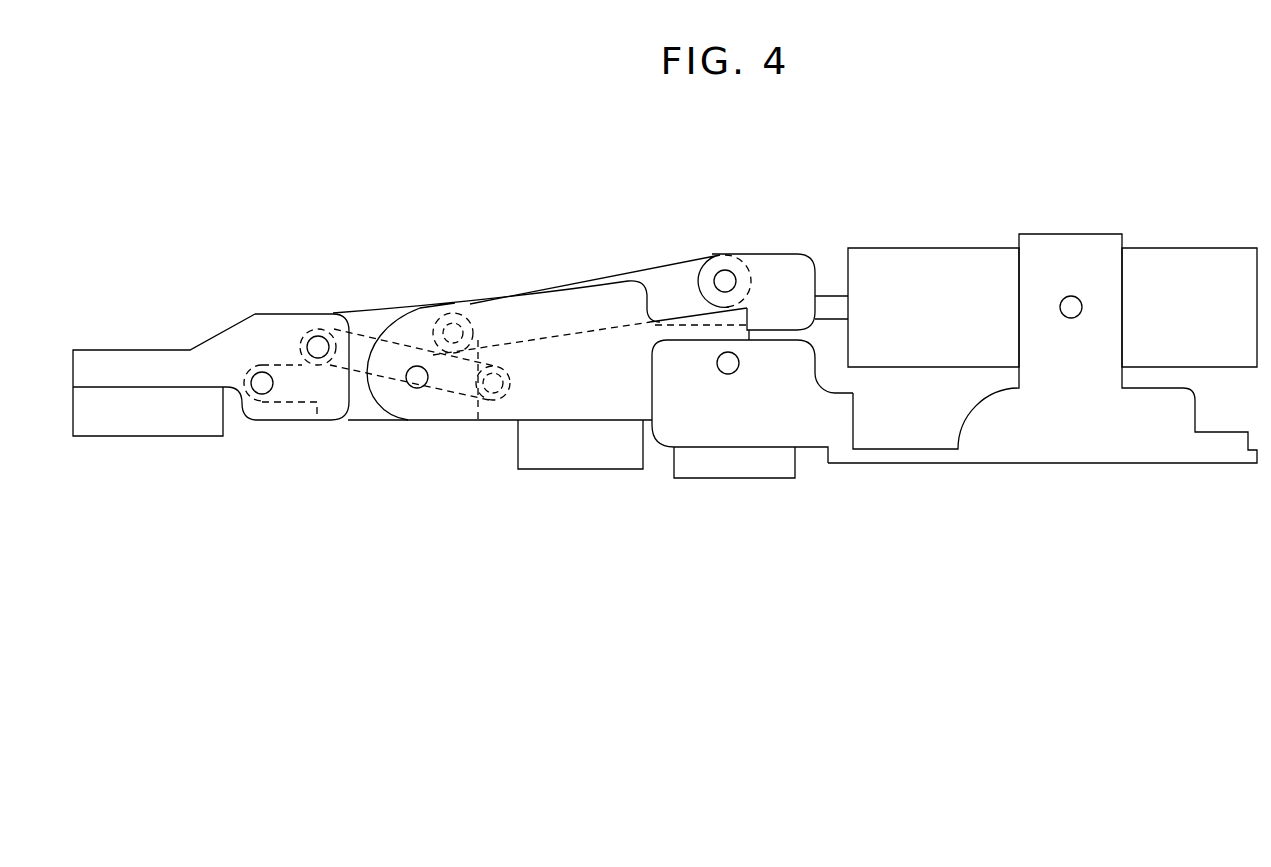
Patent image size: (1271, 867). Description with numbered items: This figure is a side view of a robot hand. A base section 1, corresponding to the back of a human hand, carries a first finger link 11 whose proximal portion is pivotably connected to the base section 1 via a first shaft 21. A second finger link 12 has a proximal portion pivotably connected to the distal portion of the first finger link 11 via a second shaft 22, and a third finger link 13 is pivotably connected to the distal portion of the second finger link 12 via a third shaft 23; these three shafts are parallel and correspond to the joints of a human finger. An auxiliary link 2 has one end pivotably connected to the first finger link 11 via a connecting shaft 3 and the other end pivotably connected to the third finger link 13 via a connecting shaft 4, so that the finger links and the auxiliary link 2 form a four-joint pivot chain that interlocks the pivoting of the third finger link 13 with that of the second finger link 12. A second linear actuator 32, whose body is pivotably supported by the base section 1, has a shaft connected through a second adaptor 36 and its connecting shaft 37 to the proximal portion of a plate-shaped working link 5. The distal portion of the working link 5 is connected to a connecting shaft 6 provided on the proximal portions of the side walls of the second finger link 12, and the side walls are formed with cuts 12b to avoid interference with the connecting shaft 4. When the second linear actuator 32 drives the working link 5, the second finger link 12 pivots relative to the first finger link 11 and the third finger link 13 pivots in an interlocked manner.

The base section 1 is at (1004, 450).
The auxiliary link 2 is at (405, 343).
The connecting shaft 3 is at (493, 395).
The connecting shaft 4 is at (317, 360).
The working link 5 is at (658, 290).
The connecting shaft 6 is at (457, 323).
The first finger link 11 is at (592, 395).
The second finger link 12 is at (355, 418).
The cut 12b is at (333, 312).
The third finger link 13 is at (197, 372).
The first shaft 21 is at (728, 375).
The second shaft 22 is at (417, 390).
The third shaft 23 is at (260, 395).
The second linear actuator 32 is at (965, 270).
The second adaptor 36 is at (777, 272).
The connecting shaft 37 is at (727, 268).